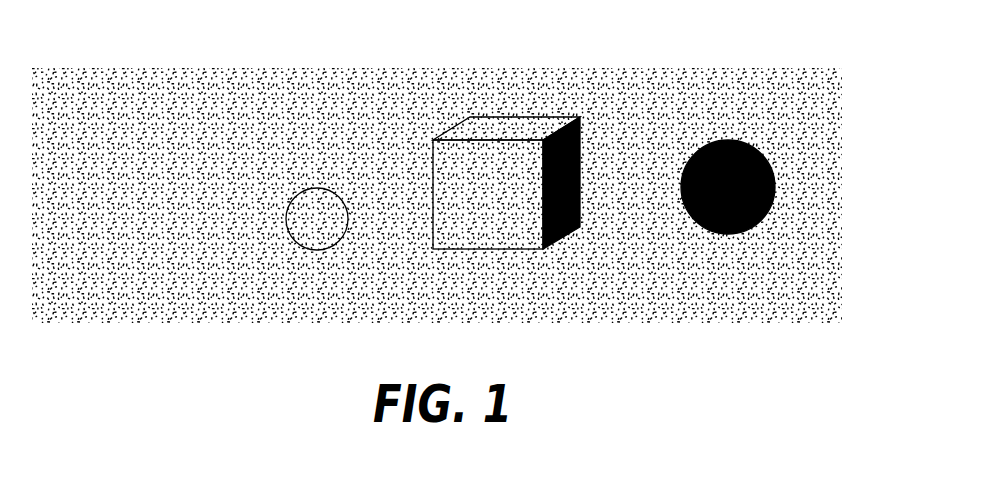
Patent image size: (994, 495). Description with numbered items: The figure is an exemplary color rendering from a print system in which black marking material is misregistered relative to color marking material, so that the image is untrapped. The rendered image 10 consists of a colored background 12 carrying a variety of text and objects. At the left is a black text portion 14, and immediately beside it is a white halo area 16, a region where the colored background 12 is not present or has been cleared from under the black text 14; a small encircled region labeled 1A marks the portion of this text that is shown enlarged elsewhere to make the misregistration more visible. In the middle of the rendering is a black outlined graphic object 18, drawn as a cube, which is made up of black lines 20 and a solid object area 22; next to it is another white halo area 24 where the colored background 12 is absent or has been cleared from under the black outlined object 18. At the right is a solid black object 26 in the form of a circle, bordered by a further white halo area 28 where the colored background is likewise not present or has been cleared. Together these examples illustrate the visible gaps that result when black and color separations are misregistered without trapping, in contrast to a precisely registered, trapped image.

The rendered image 10 is at (166, 44).
The colored background 12 is at (453, 82).
The black text portion 14 is at (287, 152).
The white halo area 16 is at (340, 188).
The detail region 1A is at (315, 250).
The black outlined graphic object 18 is at (529, 95).
The black lines 20 is at (433, 140).
The solid object area 22 is at (478, 214).
The white halo area 24 is at (553, 250).
The solid black object 26 is at (702, 146).
The white halo area 28 is at (770, 220).